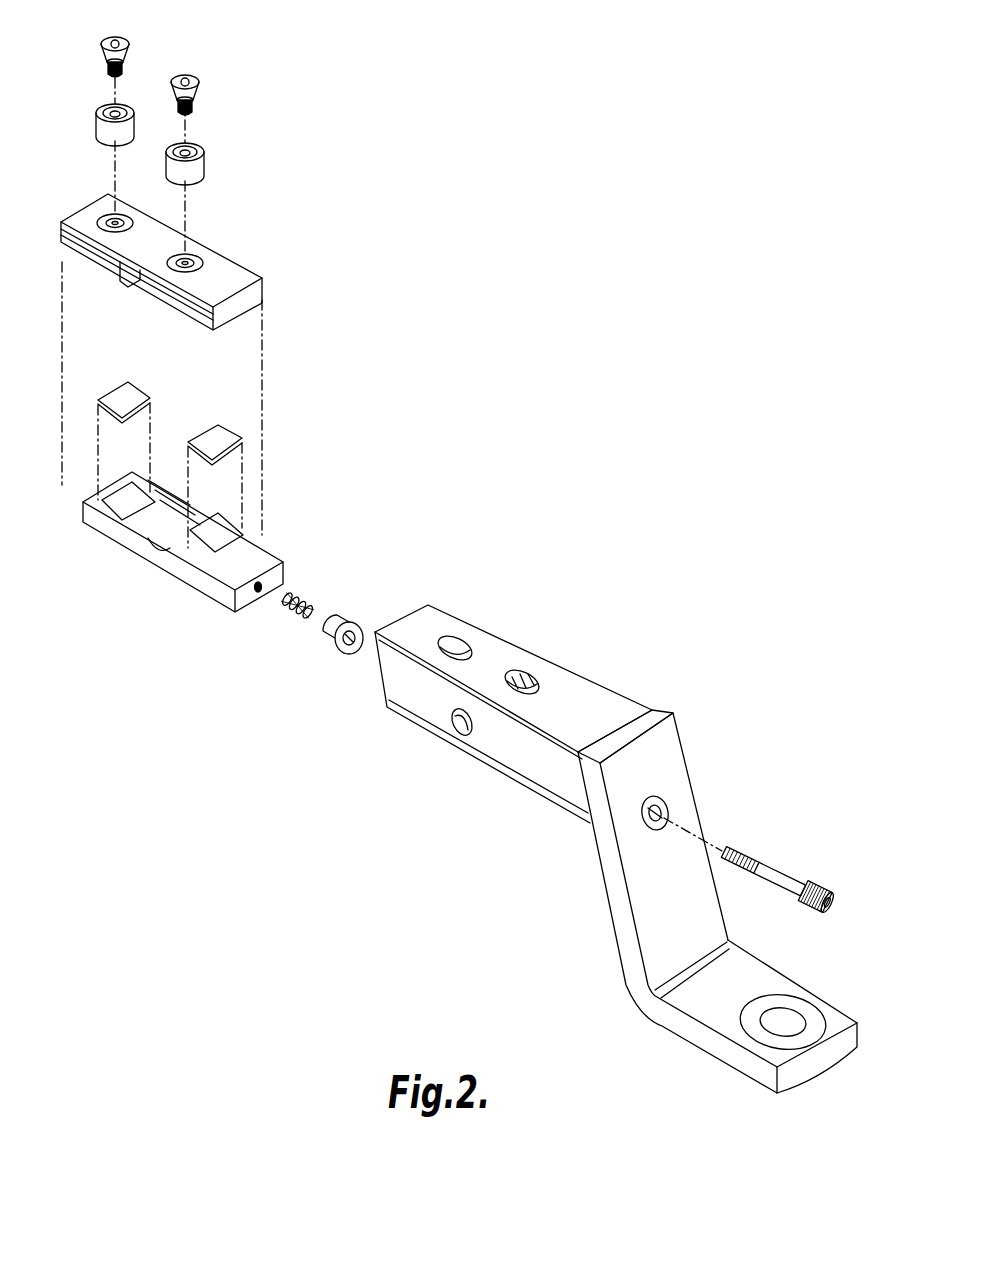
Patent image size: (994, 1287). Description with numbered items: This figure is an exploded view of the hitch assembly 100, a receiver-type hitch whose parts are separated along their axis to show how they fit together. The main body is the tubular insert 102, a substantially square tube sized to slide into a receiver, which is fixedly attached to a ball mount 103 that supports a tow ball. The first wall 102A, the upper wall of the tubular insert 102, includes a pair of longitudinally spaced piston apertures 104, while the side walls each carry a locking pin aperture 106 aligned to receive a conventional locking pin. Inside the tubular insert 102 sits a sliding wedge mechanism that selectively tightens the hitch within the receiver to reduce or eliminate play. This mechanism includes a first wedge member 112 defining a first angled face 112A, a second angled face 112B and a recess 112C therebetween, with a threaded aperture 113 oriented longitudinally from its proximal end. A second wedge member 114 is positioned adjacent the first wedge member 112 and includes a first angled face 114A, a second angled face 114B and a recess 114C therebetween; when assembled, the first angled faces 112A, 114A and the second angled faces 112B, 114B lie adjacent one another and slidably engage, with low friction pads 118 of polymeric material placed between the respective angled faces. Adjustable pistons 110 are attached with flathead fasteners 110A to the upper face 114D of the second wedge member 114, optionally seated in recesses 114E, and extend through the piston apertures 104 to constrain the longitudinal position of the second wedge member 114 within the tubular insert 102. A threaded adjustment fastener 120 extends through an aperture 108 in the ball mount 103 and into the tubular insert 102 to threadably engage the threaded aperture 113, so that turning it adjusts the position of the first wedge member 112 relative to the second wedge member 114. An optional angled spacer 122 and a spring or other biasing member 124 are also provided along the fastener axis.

The hitch assembly 100 is at (530, 224).
The tubular insert 102 is at (513, 690).
The first wall 102A is at (425, 625).
The ball mount 103 is at (717, 894).
The piston apertures 104 is at (456, 640).
The locking pin aperture 106 is at (510, 683).
The aperture 108 is at (662, 811).
The adjustable pistons 110 is at (98, 108).
The flathead fasteners 110A is at (107, 37).
The first wedge member 112 is at (202, 561).
The first angled face 112A is at (218, 572).
The second angled face 112B is at (103, 512).
The recess 112C is at (150, 542).
The threaded aperture 113 is at (260, 592).
The second wedge member 114 is at (194, 262).
The first angled face 114A is at (183, 308).
The second angled face 114B is at (88, 270).
The recess 114C is at (140, 272).
The upper face 114D is at (230, 277).
The recesses 114E is at (107, 213).
The low friction pads 118 is at (112, 393).
The threaded adjustment fastener 120 is at (787, 880).
The angled spacer 122 is at (350, 621).
The biasing member 124 is at (303, 600).